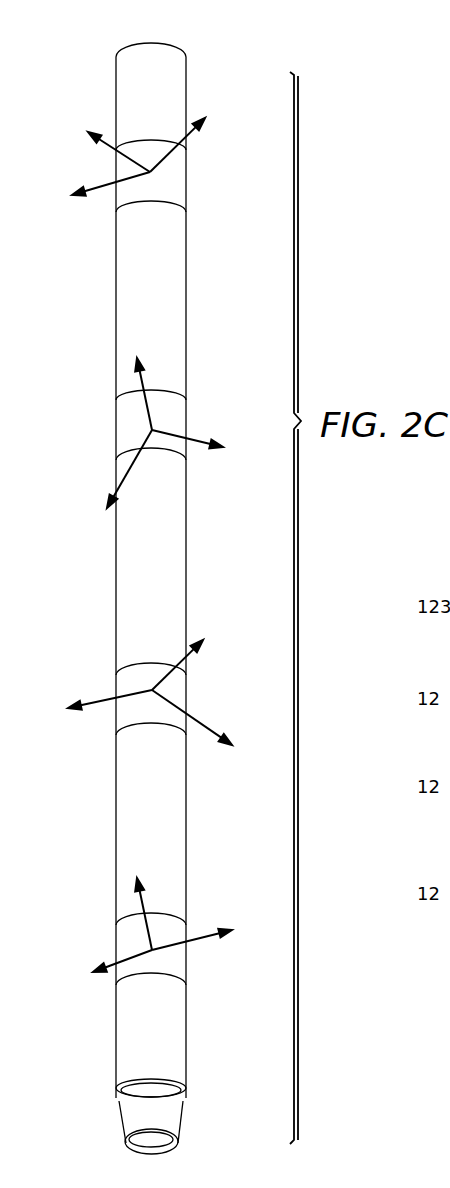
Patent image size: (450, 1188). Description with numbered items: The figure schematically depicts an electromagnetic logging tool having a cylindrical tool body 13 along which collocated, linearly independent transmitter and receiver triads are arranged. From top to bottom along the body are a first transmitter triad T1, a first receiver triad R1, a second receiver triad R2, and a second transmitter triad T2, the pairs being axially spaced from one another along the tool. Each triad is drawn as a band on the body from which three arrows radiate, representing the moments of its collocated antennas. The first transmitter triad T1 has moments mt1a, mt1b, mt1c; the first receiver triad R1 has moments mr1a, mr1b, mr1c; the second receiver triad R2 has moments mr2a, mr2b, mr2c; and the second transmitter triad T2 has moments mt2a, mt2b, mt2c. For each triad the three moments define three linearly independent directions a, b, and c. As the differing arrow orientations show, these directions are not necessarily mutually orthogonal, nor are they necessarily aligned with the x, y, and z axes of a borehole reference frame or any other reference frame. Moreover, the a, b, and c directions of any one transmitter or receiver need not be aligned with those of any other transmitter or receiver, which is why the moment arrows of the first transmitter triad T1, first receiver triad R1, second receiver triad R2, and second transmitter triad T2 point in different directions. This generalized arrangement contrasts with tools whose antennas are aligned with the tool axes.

The tubular body 13 is at (278, 598).
The first transmitter triad T1 is at (176, 176).
The second transmitter triad T2 is at (178, 949).
The first receiver triad R1 is at (178, 425).
The second receiver triad R2 is at (178, 699).
The first transmitter a-direction moment mt1a is at (86, 189).
The first transmitter b-direction moment mt1b is at (93, 142).
The first transmitter c-direction moment mt1c is at (196, 135).
The first receiver a-direction moment mr1a is at (103, 473).
The first receiver b-direction moment mr1b is at (212, 445).
The first receiver c-direction moment mr1c is at (145, 383).
The second receiver a-direction moment mr2a is at (84, 704).
The second receiver b-direction moment mr2b is at (216, 723).
The second receiver c-direction moment mr2c is at (195, 654).
The second transmitter a-direction moment mt2a is at (97, 967).
The second transmitter b-direction moment mt2b is at (217, 934).
The second transmitter c-direction moment mt2c is at (150, 901).